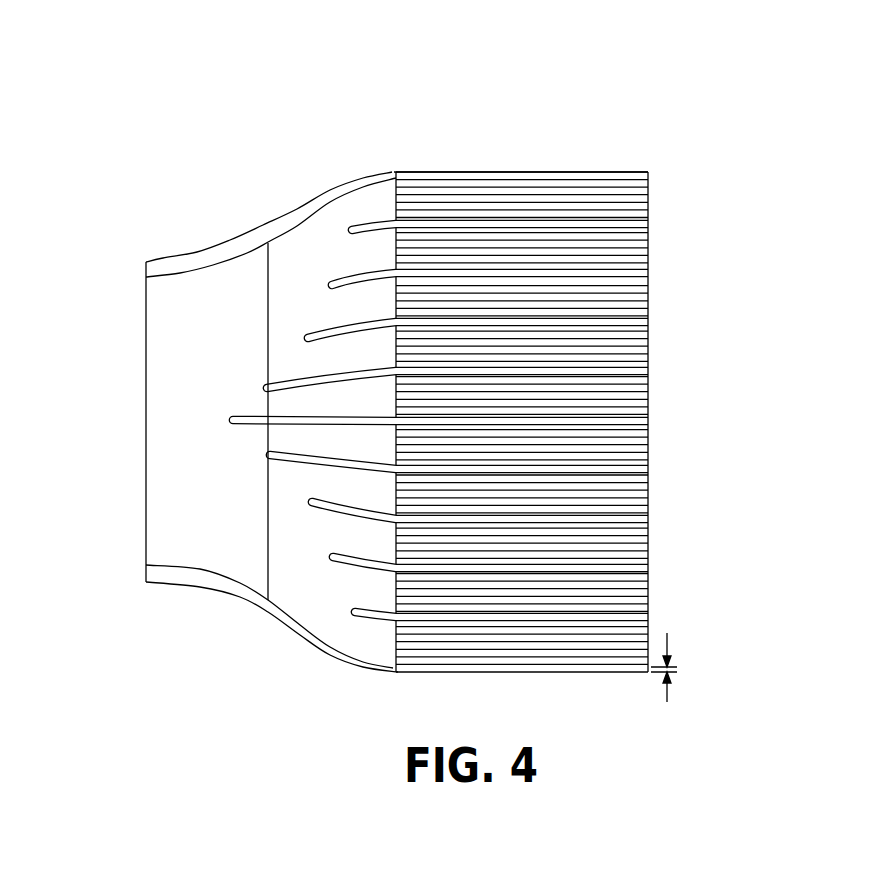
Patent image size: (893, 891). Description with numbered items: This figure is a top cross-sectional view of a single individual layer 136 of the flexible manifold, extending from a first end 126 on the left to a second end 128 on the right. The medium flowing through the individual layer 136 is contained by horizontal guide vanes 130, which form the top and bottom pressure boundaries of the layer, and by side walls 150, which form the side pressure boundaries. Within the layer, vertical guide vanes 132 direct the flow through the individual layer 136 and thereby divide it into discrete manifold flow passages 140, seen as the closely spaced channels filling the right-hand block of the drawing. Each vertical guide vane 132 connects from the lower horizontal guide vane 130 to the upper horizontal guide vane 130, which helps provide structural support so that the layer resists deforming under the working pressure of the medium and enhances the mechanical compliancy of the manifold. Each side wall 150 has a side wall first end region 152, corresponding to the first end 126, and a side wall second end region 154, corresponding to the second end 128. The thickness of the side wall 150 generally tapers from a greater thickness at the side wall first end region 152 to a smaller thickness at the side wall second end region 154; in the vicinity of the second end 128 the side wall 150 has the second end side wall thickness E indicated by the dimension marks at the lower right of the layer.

The first end 126 is at (108, 399).
The second end 128 is at (706, 386).
The horizontal guide vane 130 is at (303, 250).
The vertical guide vanes 132 is at (452, 240).
The individual layer 136 is at (592, 76).
The discrete manifold flow passage 140 is at (656, 229).
The side wall 150 is at (313, 200).
The side wall first end region 152 is at (252, 195).
The side wall second end region 154 is at (522, 172).
The second end side wall thickness E is at (675, 667).